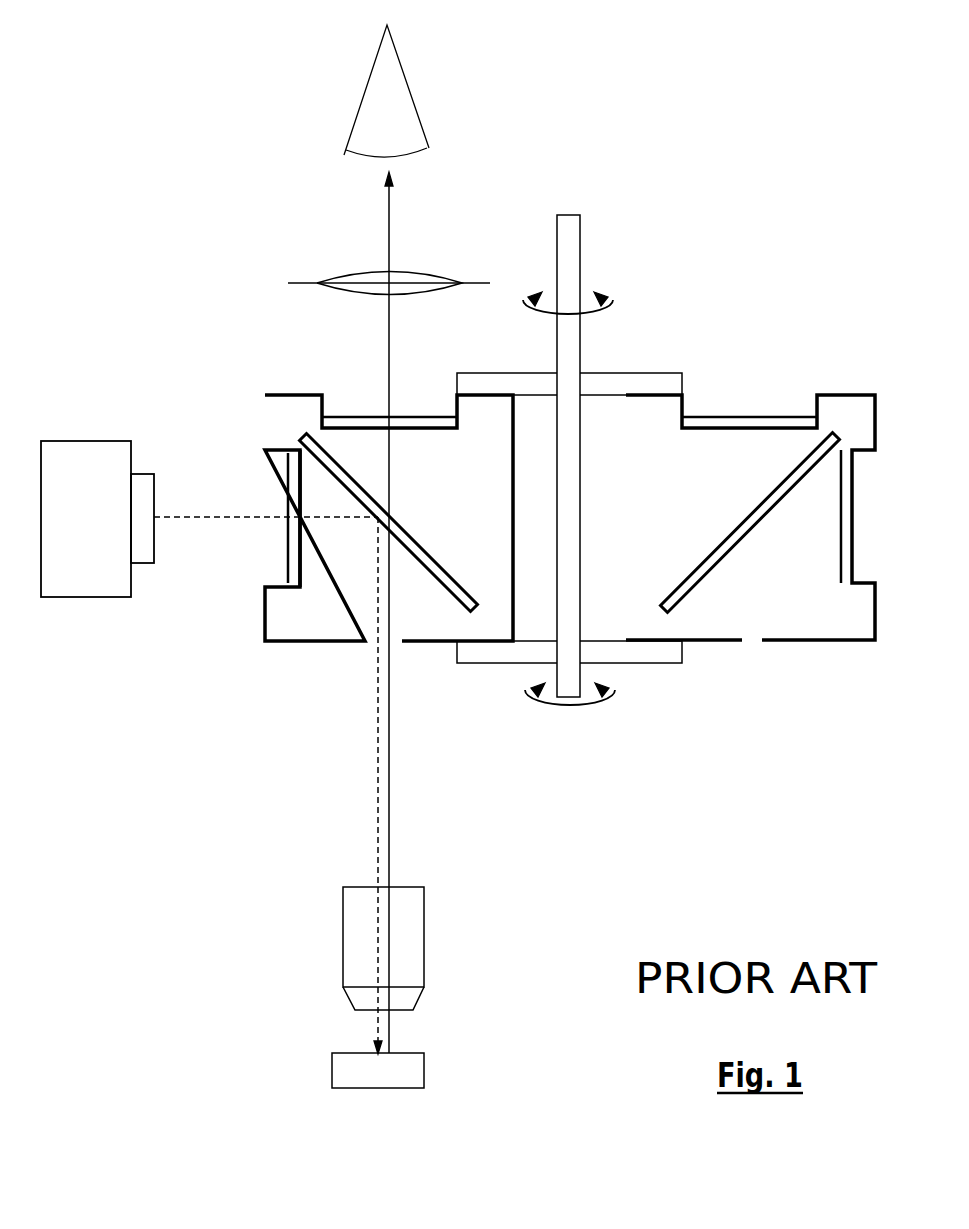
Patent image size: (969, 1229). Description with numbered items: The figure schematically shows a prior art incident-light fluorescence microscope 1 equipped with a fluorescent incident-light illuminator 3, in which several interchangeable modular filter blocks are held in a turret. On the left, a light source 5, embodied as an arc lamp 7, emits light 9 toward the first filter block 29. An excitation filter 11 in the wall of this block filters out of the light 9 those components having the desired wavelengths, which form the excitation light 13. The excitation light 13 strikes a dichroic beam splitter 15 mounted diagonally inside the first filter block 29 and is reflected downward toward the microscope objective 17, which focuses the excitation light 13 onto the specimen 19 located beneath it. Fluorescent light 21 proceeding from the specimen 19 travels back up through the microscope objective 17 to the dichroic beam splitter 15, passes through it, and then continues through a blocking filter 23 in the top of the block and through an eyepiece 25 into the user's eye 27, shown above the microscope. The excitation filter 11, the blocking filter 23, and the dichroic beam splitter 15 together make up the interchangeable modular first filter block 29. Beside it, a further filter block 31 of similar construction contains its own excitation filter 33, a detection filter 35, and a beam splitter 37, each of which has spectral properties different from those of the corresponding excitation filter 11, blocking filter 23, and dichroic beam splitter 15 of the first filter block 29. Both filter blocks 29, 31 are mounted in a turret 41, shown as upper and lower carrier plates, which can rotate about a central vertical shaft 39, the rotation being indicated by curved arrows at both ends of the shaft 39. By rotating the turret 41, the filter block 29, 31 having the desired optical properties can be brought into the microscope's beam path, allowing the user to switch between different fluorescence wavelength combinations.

The incident-light fluorescence microscope 1 is at (191, 138).
The fluorescent incident-light illuminator 3 is at (655, 450).
The light source 5 is at (97, 427).
The arc lamp 7 is at (87, 463).
The light 9 is at (210, 517).
The excitation filter 11 is at (293, 553).
The excitation light 13 is at (333, 520).
The dichroic beam splitter 15 is at (432, 570).
The microscope objective 17 is at (398, 942).
The specimen 19 is at (412, 1078).
The fluorescent light 21 is at (390, 773).
The blocking filter 23 is at (420, 425).
The eyepiece 25 is at (412, 282).
The user's eye 27 is at (402, 103).
The first filter block 29 is at (347, 496).
The further filter block 31 is at (769, 491).
The excitation filter 33 is at (846, 517).
The detection filter 35 is at (723, 418).
The beam splitter 37 is at (700, 573).
The shaft 39 is at (568, 260).
The turret 41 is at (625, 385).